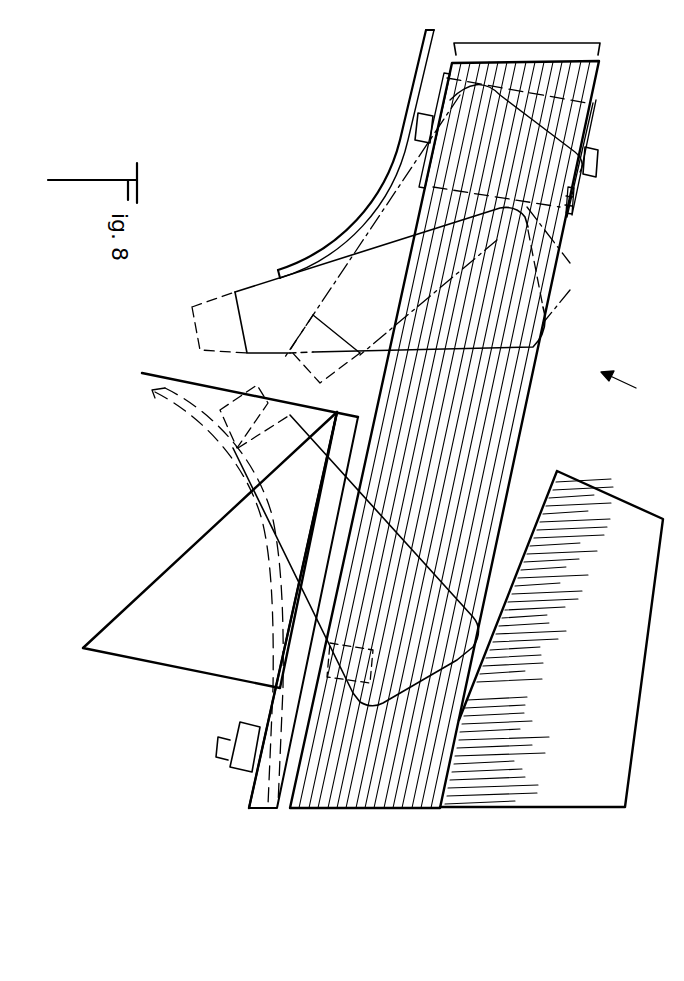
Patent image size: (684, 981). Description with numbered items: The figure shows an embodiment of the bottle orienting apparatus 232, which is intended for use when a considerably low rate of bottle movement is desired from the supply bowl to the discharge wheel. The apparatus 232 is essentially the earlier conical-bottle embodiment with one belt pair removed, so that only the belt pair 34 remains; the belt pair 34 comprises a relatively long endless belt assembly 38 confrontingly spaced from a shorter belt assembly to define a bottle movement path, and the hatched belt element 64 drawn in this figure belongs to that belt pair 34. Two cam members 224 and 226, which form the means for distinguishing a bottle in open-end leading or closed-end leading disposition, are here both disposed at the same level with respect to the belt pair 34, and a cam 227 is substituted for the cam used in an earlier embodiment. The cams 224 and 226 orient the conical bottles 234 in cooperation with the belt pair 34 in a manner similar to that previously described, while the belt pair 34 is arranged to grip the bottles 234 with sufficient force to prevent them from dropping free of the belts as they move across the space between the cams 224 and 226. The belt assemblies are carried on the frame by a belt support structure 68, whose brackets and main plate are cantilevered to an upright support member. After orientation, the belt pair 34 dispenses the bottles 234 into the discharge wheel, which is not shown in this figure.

The belt pair 34 is at (542, 40).
The relatively long endless belt assembly 38 is at (526, 453).
The hatched band 64 is at (430, 430).
The belt support structure 68 is at (97, 577).
The cam member 224 is at (320, 260).
The cam member 226 is at (280, 617).
The cam 227 is at (551, 639).
The apparatus 232 is at (634, 395).
The conical bottles 234 is at (396, 400).